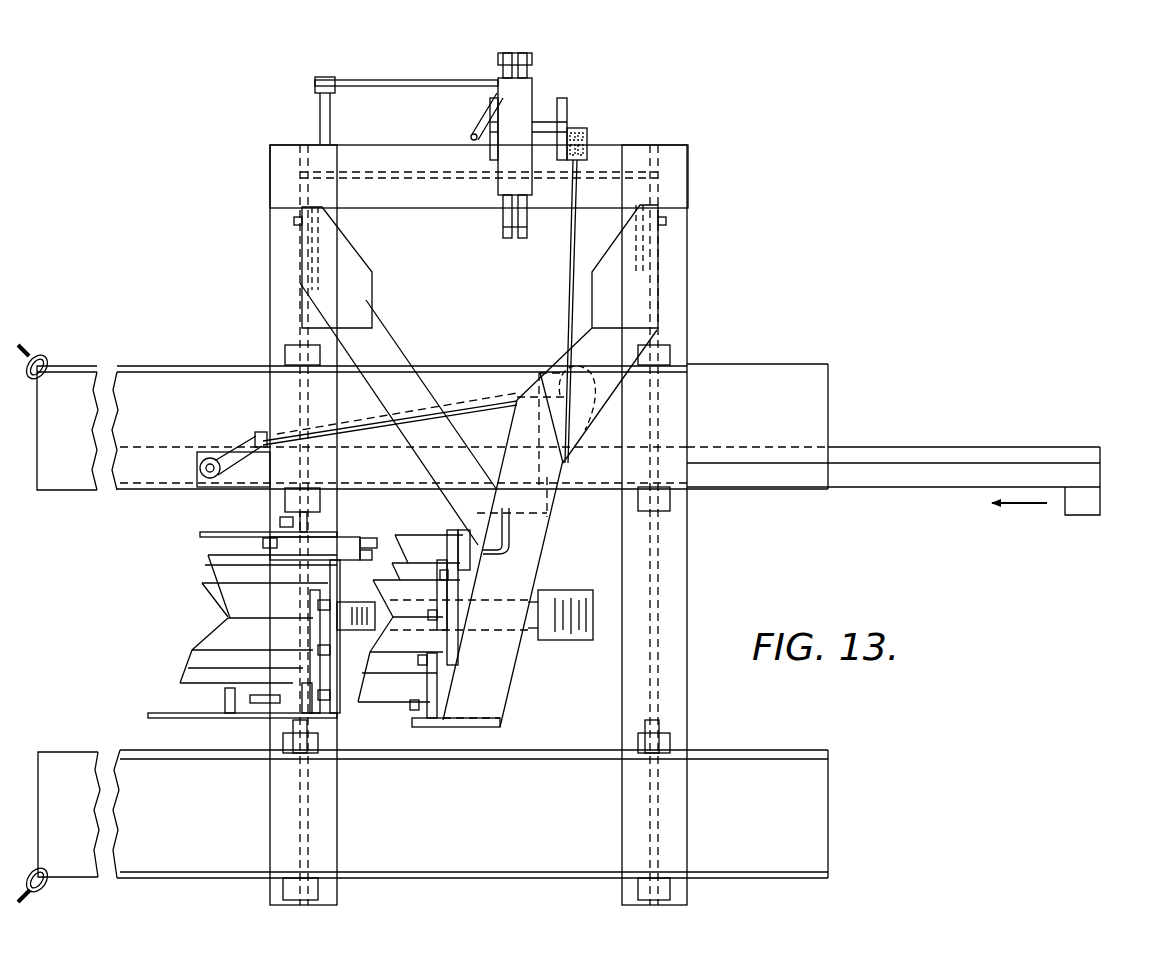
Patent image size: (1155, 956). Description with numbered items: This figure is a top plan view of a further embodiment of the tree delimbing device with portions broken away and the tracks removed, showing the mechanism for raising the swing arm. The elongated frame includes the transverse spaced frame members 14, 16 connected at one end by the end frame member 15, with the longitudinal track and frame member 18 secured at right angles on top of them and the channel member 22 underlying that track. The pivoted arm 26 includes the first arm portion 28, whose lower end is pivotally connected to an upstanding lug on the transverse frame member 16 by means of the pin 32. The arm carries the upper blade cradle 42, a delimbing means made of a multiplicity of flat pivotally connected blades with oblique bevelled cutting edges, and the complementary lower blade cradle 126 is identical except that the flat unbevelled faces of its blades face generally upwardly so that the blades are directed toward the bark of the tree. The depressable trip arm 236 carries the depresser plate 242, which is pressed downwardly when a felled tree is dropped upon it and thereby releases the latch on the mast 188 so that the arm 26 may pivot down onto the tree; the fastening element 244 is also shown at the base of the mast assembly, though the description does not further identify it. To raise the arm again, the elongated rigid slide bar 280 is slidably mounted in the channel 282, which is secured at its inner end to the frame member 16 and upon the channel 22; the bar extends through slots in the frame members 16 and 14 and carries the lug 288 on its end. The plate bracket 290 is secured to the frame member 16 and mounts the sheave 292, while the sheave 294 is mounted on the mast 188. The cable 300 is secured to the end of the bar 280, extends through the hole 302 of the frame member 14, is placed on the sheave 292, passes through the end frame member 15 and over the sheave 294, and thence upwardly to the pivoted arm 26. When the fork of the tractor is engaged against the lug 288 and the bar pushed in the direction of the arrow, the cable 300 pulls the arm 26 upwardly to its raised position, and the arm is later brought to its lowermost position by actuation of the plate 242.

The transverse frame member 14 is at (269, 262).
The end frame member 15 is at (232, 525).
The transverse frame member 16 is at (703, 302).
The longitudinal track and frame member 18 is at (190, 367).
The channel member 22 is at (730, 362).
The pivoted arm 26 is at (395, 335).
The first arm portion 28 is at (527, 578).
The pin 32 is at (666, 221).
The upper blade cradle 42 is at (388, 708).
The lower blade cradle 126 is at (190, 683).
The mast 188 is at (567, 105).
The depressable trip arm 236 is at (529, 633).
The depresser plate 242 is at (555, 640).
The mounting bolts 244 is at (505, 233).
The slide bar 280 is at (208, 455).
The channel 282 is at (957, 460).
The lug 288 is at (1073, 505).
The plate bracket 290 is at (538, 430).
The sheave 292 is at (580, 410).
The sheave 294 is at (587, 147).
The cable 300 is at (565, 327).
The hole 302 is at (312, 420).